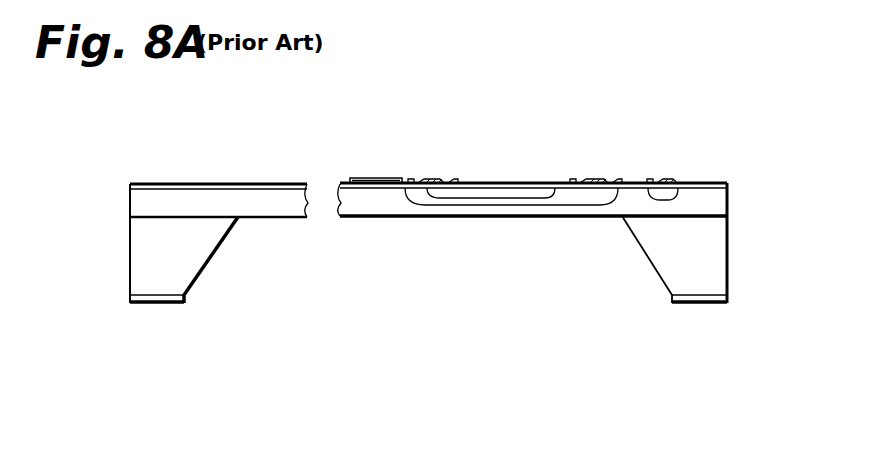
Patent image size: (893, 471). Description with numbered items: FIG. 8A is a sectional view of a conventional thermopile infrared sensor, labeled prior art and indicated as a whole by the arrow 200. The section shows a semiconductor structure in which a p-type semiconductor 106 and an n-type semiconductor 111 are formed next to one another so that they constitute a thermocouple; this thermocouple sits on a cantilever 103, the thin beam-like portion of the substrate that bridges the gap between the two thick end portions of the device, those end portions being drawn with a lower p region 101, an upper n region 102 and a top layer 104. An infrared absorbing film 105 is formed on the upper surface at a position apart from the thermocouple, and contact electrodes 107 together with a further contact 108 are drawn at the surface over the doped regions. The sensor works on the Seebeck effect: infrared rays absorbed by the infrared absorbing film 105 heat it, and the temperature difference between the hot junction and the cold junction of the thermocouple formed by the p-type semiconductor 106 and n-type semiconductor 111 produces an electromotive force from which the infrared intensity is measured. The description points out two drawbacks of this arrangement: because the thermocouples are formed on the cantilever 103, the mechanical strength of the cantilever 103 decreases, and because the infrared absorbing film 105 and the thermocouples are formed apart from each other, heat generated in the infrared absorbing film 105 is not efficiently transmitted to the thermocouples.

The p-type substrate 101 is at (139, 265).
The n-type epitaxial layer 102 is at (153, 196).
The cantilever 103 is at (389, 218).
The top insulating layer 104 is at (251, 182).
The infrared absorbing film 105 is at (366, 178).
The p-type semiconductor 106 is at (552, 198).
The electrodes 107 is at (431, 178).
The n+ contact electrode 108 is at (677, 183).
The n-type semiconductor 111 is at (506, 190).
The semiconductor device (prior art) 200 is at (478, 160).